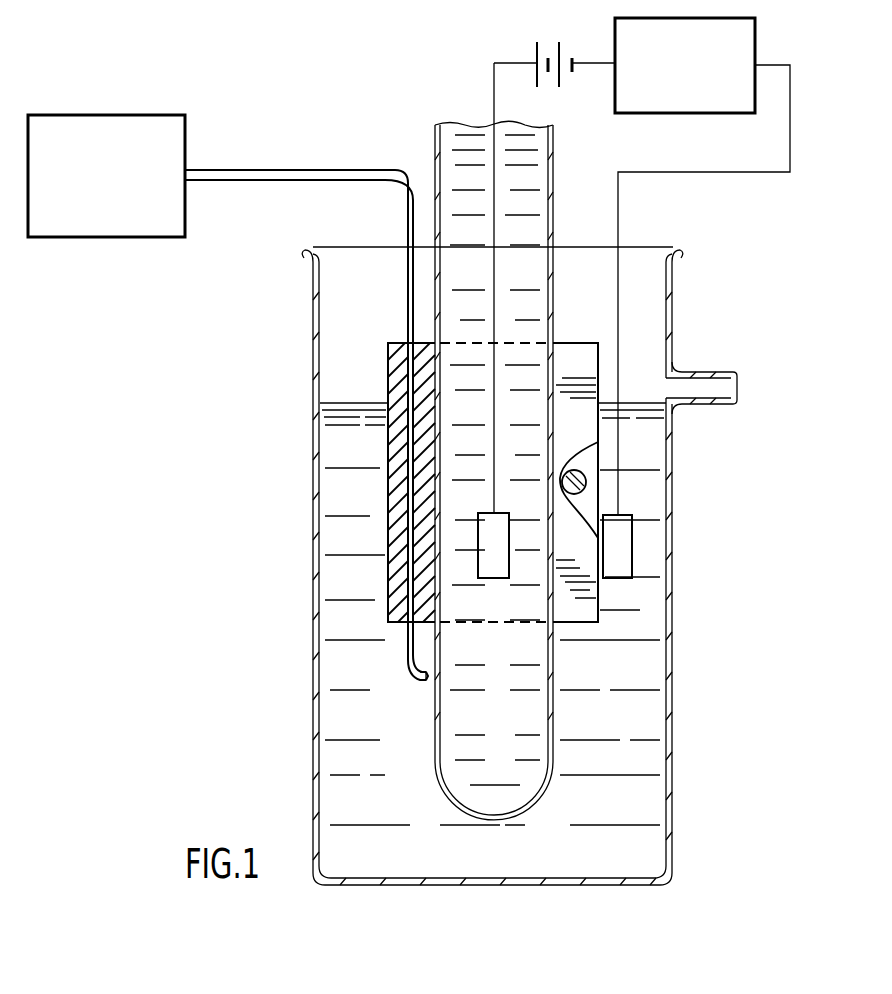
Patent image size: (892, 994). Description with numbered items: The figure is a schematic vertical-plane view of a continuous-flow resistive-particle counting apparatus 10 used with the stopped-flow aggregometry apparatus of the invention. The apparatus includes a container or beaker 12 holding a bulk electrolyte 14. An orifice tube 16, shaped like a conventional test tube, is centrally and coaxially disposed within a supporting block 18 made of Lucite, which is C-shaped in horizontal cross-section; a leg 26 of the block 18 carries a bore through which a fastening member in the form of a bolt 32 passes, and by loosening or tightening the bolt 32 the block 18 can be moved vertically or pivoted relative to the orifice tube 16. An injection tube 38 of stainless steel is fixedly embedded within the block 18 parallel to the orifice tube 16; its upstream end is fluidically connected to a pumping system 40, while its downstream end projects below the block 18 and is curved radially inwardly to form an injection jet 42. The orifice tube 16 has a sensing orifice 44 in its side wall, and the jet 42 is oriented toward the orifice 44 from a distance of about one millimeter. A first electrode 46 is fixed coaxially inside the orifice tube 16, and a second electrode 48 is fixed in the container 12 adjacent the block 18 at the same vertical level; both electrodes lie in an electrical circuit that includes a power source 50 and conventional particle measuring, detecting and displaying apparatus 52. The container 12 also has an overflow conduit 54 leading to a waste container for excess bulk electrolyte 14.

The continuous-flow resistive-particle counting apparatus 10 is at (298, 657).
The container 12 is at (352, 886).
The bulk electrolyte 14 is at (594, 845).
The orifice tube 16 is at (553, 738).
The supporting block 18 is at (566, 343).
The leg of block 26 is at (572, 612).
The bolt 32 is at (568, 494).
The injection tube 38 is at (405, 536).
The pumping system 40 is at (114, 186).
The injection jet 42 is at (422, 684).
The sensing orifice 44 is at (440, 680).
The first electrode 46 is at (482, 527).
The second electrode 48 is at (617, 565).
The power source 50 is at (535, 50).
The particle measuring, detecting, and displaying apparatus 52 is at (700, 76).
The overflow conduit 54 is at (713, 372).